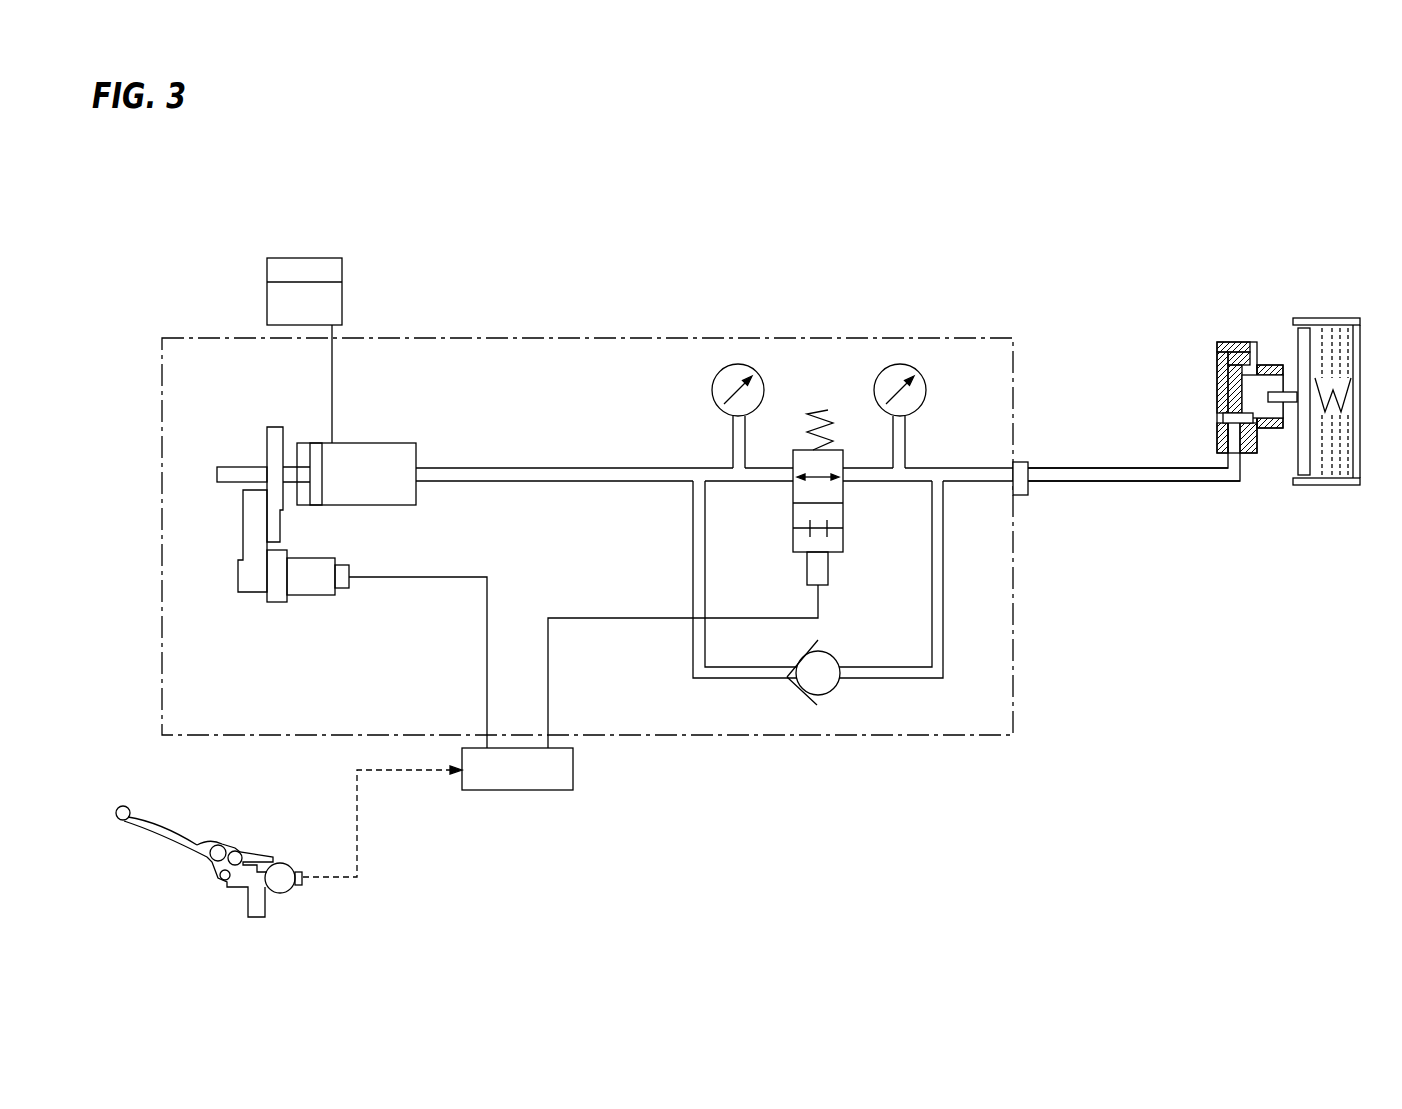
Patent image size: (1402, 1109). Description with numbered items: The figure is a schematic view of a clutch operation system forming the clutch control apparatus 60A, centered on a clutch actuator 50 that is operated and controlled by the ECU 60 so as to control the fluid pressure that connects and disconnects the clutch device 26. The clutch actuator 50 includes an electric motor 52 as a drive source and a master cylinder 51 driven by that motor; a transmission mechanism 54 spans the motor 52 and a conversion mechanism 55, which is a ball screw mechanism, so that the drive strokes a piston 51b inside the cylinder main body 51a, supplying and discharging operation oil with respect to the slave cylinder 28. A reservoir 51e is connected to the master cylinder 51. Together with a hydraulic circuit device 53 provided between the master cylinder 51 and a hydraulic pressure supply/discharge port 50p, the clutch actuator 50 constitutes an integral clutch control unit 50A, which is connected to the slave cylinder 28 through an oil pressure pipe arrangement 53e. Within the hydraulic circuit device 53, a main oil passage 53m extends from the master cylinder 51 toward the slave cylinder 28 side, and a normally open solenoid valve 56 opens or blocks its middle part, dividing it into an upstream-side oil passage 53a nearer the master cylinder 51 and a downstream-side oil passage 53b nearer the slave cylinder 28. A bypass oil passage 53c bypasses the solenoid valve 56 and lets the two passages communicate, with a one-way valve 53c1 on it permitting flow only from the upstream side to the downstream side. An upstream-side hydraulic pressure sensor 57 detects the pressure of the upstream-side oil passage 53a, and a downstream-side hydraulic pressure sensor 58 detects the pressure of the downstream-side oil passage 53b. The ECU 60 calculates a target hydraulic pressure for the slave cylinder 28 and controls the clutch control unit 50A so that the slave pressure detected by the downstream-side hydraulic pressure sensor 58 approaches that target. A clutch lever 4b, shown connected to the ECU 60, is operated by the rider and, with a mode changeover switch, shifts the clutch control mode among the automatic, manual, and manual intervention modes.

The clutch lever 4b is at (168, 855).
The clutch device 26 is at (1348, 308).
The slave cylinder 28 is at (1230, 330).
The clutch actuator 50 is at (228, 362).
The clutch control unit 50A is at (443, 325).
The hydraulic pressure supply/discharge port 50p is at (1022, 495).
The master cylinder 51 is at (368, 373).
The cylinder main body 51a is at (380, 443).
The piston 51b is at (317, 490).
The reservoir 51e is at (310, 258).
The electric motor 52 is at (305, 602).
The hydraulic circuit device 53 is at (590, 368).
The upstream-side oil passage 53a is at (535, 468).
The downstream-side oil passage 53b is at (998, 430).
The bypass oil passage 53c is at (819, 648).
The one-way valve 53c1 is at (908, 673).
The oil pressure pipe arrangement 53e is at (1095, 470).
The main oil passage 53m is at (828, 424).
The transmission mechanism 54 is at (243, 520).
The conversion mechanism 55 is at (268, 445).
The solenoid valve 56 is at (852, 567).
The upstream-side hydraulic pressure sensor 57 is at (713, 385).
The downstream-side hydraulic pressure sensor 58 is at (875, 385).
The ECU 60 is at (512, 790).
The clutch control apparatus 60A is at (734, 200).